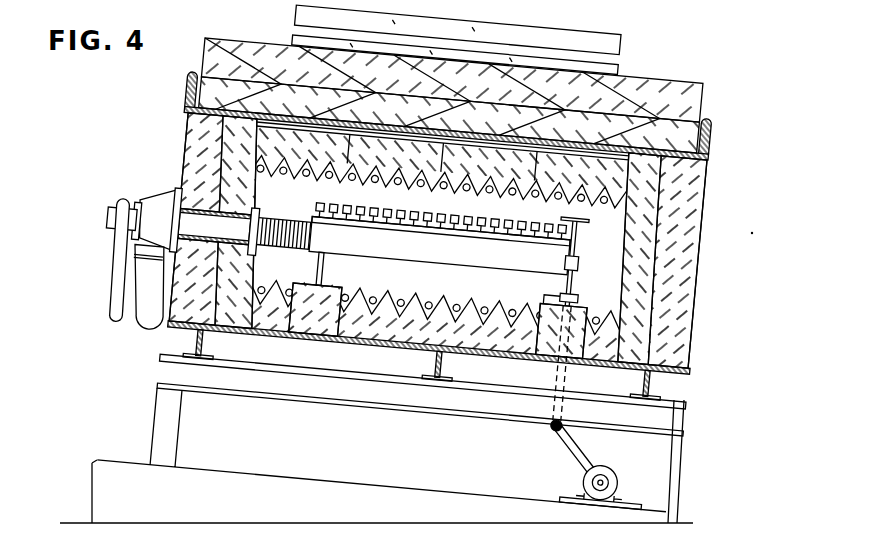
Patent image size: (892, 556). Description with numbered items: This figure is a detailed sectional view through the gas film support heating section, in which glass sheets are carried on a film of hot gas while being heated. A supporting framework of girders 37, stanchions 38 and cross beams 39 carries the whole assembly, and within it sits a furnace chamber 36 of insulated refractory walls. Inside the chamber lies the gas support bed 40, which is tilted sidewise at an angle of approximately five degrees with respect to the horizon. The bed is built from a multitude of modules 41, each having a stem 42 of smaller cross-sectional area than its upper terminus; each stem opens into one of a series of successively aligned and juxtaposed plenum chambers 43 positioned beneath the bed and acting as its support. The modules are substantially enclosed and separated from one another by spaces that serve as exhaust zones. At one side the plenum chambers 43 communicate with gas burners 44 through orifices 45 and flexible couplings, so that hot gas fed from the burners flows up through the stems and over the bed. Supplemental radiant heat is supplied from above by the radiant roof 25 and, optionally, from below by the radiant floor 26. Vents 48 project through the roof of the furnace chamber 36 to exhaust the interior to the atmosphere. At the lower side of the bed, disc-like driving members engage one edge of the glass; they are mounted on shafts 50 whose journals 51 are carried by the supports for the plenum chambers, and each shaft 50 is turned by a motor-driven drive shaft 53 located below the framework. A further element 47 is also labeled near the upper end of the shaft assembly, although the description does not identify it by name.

The radiant roof 25 is at (411, 186).
The radiant floor 26 is at (424, 293).
The furnace chamber 36 is at (297, 201).
The girders 37 is at (207, 347).
The stanchions 38 is at (183, 425).
The cross beams 39 is at (452, 411).
The bed 40 is at (476, 206).
The module 41 is at (333, 209).
The stem 42 is at (317, 213).
The plenum chambers 43 is at (447, 259).
The gas burners 44 is at (126, 207).
The orifices 45 is at (118, 268).
The cap 47 is at (586, 217).
The vents 48 is at (294, 17).
The shafts 50 is at (576, 233).
The journals 51 is at (572, 268).
The motor-driven drive shaft 53 is at (547, 431).